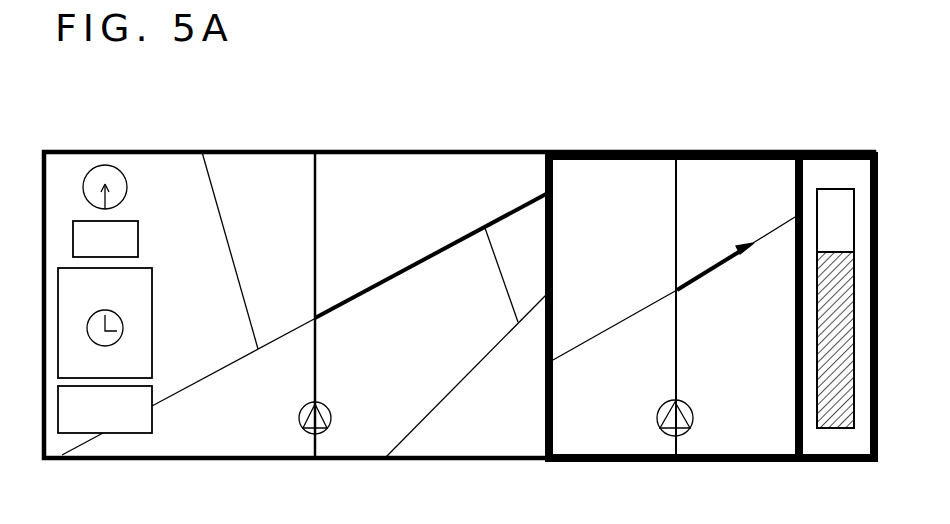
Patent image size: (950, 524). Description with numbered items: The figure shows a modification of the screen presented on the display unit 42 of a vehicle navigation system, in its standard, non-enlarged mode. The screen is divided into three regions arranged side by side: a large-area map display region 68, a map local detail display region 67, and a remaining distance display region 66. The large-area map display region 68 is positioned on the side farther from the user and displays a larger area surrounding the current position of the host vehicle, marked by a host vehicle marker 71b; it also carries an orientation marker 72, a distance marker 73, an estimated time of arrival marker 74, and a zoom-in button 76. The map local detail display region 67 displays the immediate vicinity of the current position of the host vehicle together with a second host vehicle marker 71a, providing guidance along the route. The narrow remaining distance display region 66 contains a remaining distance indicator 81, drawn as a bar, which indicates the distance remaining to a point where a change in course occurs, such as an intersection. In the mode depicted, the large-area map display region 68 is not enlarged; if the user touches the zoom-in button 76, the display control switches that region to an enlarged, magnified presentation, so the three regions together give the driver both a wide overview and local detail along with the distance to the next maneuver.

The display unit 42 is at (180, 150).
The remaining distance display region 66 is at (835, 176).
The map local detail display region 67 is at (727, 176).
The large-area map display region 68 is at (407, 176).
The host vehicle marker 71a is at (678, 437).
The host vehicle marker 71b is at (318, 434).
The orientation marker 72 is at (128, 187).
The distance marker 73 is at (138, 239).
The estimated time of arrival marker 74 is at (152, 320).
The zoom-in button 76 is at (152, 420).
The remaining distance indicator 81 is at (822, 428).